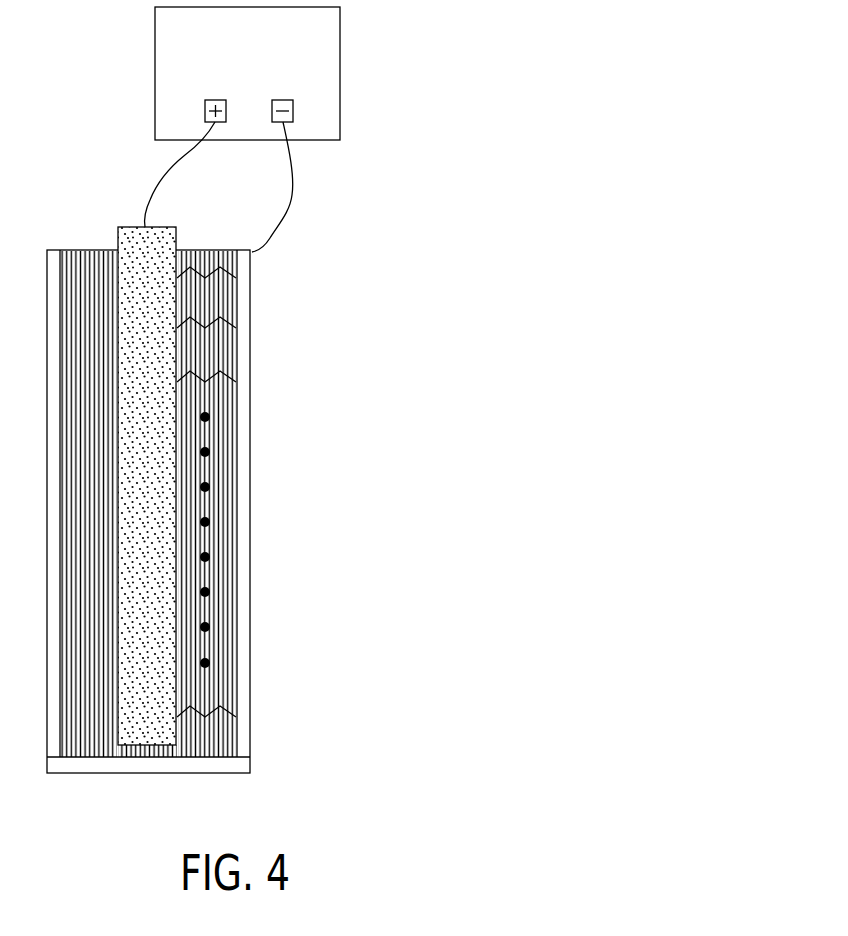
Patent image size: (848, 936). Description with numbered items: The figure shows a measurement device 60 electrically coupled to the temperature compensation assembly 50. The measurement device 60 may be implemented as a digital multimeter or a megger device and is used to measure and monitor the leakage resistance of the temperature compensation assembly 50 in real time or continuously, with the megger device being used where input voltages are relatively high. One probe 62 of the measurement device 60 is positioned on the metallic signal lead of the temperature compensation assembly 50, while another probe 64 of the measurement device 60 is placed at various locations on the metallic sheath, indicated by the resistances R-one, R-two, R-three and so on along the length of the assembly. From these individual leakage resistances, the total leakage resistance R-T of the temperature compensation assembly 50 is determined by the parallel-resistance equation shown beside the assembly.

The temperature compensation assembly 50 is at (380, 302).
The measurement device 60 is at (340, 80).
The probe 62 is at (155, 185).
The probe 64 is at (297, 190).